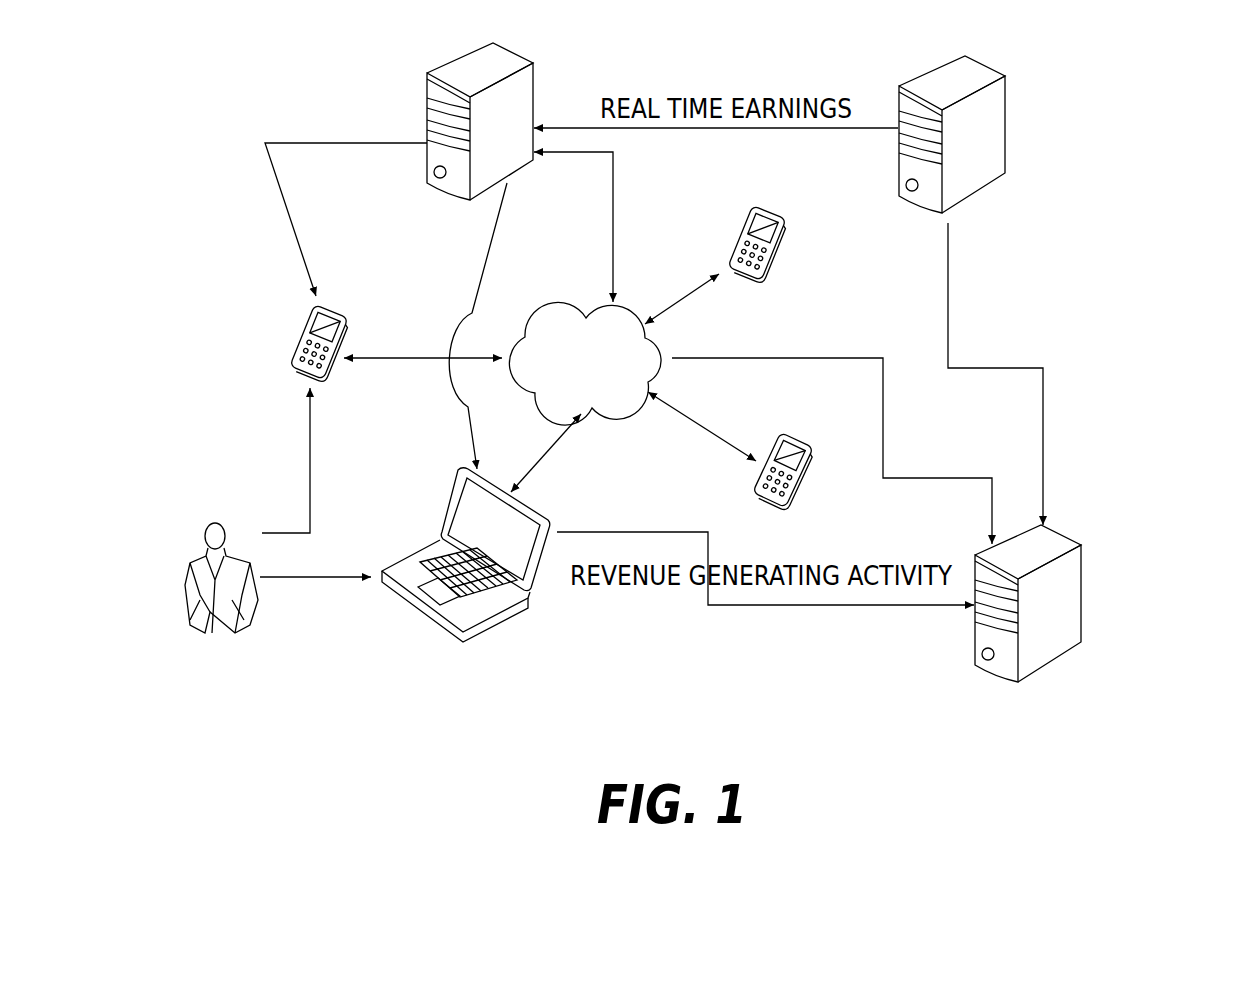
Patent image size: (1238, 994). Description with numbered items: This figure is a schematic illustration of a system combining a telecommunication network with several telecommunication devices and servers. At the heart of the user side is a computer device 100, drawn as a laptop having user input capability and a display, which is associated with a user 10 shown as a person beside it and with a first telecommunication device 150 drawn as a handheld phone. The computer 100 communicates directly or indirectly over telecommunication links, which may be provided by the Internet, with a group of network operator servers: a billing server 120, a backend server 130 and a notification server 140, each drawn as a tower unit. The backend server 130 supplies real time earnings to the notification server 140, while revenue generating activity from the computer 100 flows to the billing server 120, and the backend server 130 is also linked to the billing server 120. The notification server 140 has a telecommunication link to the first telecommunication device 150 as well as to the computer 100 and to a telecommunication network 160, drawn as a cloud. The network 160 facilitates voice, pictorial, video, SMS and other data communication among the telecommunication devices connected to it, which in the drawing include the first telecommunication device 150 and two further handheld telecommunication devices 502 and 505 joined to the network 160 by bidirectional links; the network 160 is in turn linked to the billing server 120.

The user 10 is at (190, 580).
The computer device 100 is at (528, 600).
The billing server 120 is at (975, 640).
The backend server 130 is at (1005, 147).
The notification server 140 is at (533, 66).
The first telecommunication device 150 is at (297, 342).
The telecommunication network 160 is at (569, 371).
The mobile device 502 is at (783, 257).
The mobile device 505 is at (749, 490).